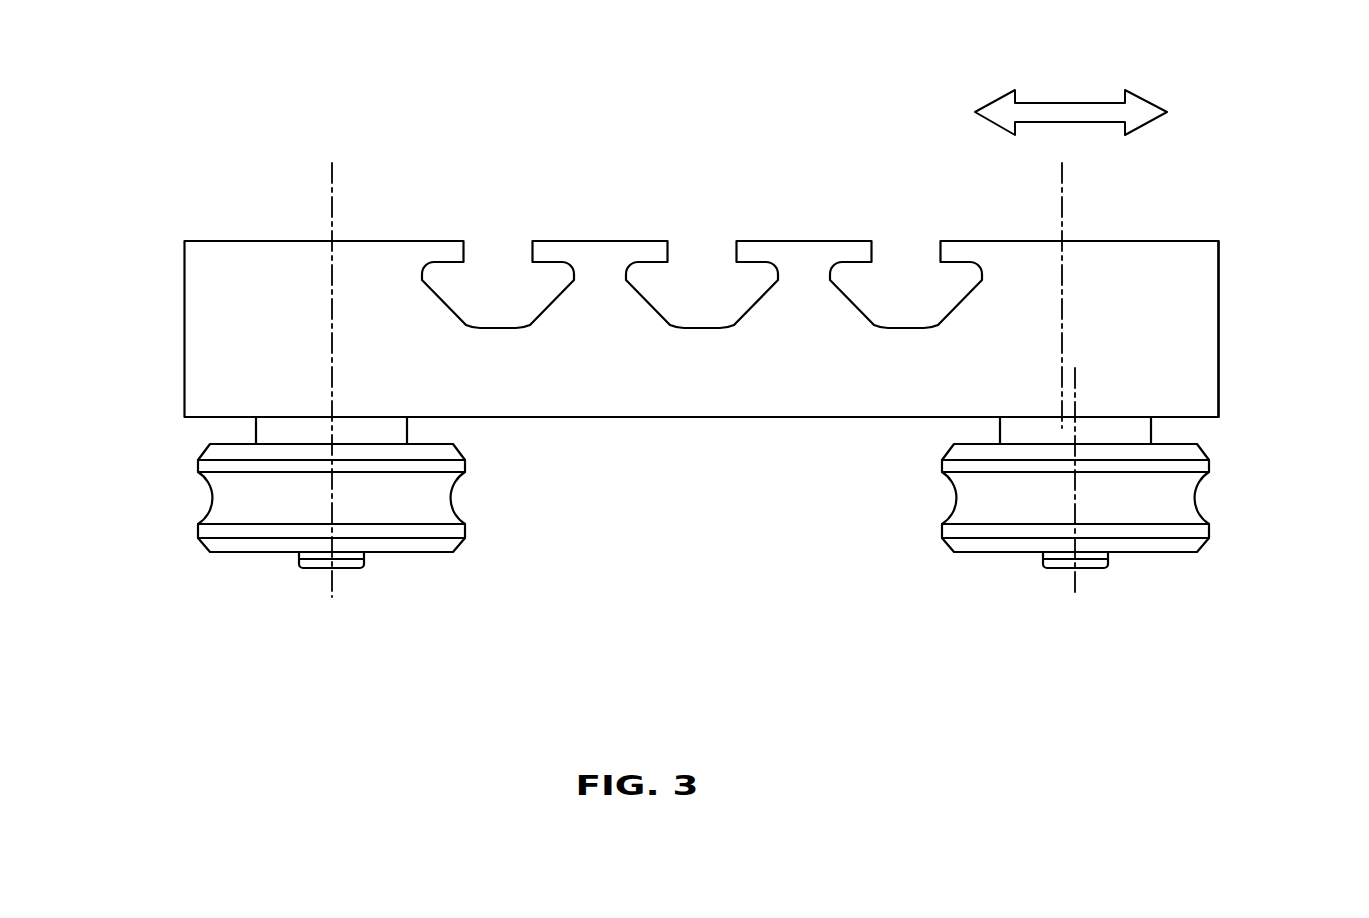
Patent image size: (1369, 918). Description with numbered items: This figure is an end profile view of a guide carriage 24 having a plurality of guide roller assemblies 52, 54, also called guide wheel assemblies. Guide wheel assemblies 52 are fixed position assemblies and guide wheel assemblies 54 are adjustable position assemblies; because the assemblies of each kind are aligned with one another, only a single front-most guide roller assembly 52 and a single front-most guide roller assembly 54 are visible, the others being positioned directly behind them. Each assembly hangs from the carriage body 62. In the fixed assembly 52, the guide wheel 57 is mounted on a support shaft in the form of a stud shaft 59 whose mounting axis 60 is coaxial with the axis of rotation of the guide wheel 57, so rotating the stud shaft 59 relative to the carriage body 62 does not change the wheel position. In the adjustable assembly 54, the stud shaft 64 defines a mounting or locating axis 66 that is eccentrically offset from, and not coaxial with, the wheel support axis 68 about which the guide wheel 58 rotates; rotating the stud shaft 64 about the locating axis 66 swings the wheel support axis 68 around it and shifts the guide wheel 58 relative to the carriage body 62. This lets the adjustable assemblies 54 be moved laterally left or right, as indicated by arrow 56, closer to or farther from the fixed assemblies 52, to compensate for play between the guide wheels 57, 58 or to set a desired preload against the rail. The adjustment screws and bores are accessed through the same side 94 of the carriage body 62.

The carriage 24 is at (1318, 178).
The guide roller assembly 52 is at (450, 602).
The guide roller assembly 54 is at (1192, 602).
The arrow 56 is at (1068, 102).
The guide wheel 57 is at (208, 510).
The guide wheel 58 is at (953, 510).
The stud shaft 59 is at (348, 568).
The mounting axis 60 is at (332, 192).
The carriage body 62 is at (1200, 306).
The stud shaft 64 is at (1092, 569).
The locating axis 66 is at (1062, 193).
The wheel support axis 68 is at (1076, 385).
The side 94 is at (1219, 384).